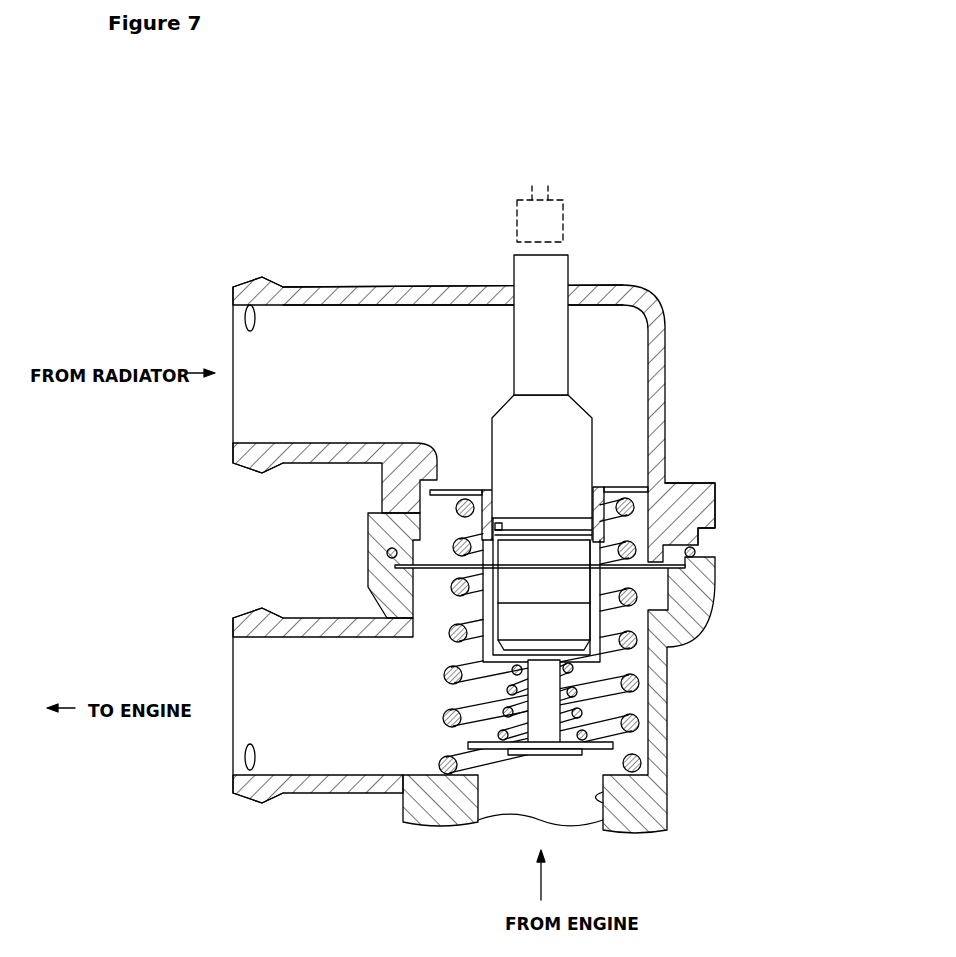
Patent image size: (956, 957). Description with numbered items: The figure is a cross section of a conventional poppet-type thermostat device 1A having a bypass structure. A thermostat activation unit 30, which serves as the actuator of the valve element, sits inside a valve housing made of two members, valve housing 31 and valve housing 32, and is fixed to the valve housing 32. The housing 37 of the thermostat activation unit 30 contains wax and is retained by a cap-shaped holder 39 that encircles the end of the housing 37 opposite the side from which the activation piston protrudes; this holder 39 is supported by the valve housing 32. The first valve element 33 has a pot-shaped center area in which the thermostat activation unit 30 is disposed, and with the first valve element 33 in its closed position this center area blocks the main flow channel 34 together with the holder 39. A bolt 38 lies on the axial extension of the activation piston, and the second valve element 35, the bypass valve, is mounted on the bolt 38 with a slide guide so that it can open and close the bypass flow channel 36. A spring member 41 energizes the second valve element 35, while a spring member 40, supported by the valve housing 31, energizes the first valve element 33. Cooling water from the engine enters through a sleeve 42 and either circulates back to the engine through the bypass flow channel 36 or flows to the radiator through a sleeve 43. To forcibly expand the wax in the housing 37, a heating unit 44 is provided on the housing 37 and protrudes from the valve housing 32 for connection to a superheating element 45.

The thermostat device 1A is at (713, 258).
The thermostat activation unit 30 is at (529, 376).
The valve housing 31 is at (529, 705).
The valve housing 32 is at (353, 297).
The first valve element 33 is at (615, 485).
The main flow channel 34 is at (620, 484).
The second valve element 35 is at (660, 748).
The bypass flow channel 36 is at (620, 802).
The housing 37 is at (565, 585).
The bolt 38 is at (552, 687).
The holder 39 is at (580, 443).
The spring member 40 is at (635, 550).
The spring member 41 is at (645, 710).
The sleeve 42 is at (250, 305).
The sleeve 43 is at (250, 775).
The heating unit 44 is at (553, 270).
The superheating element 45 is at (553, 223).